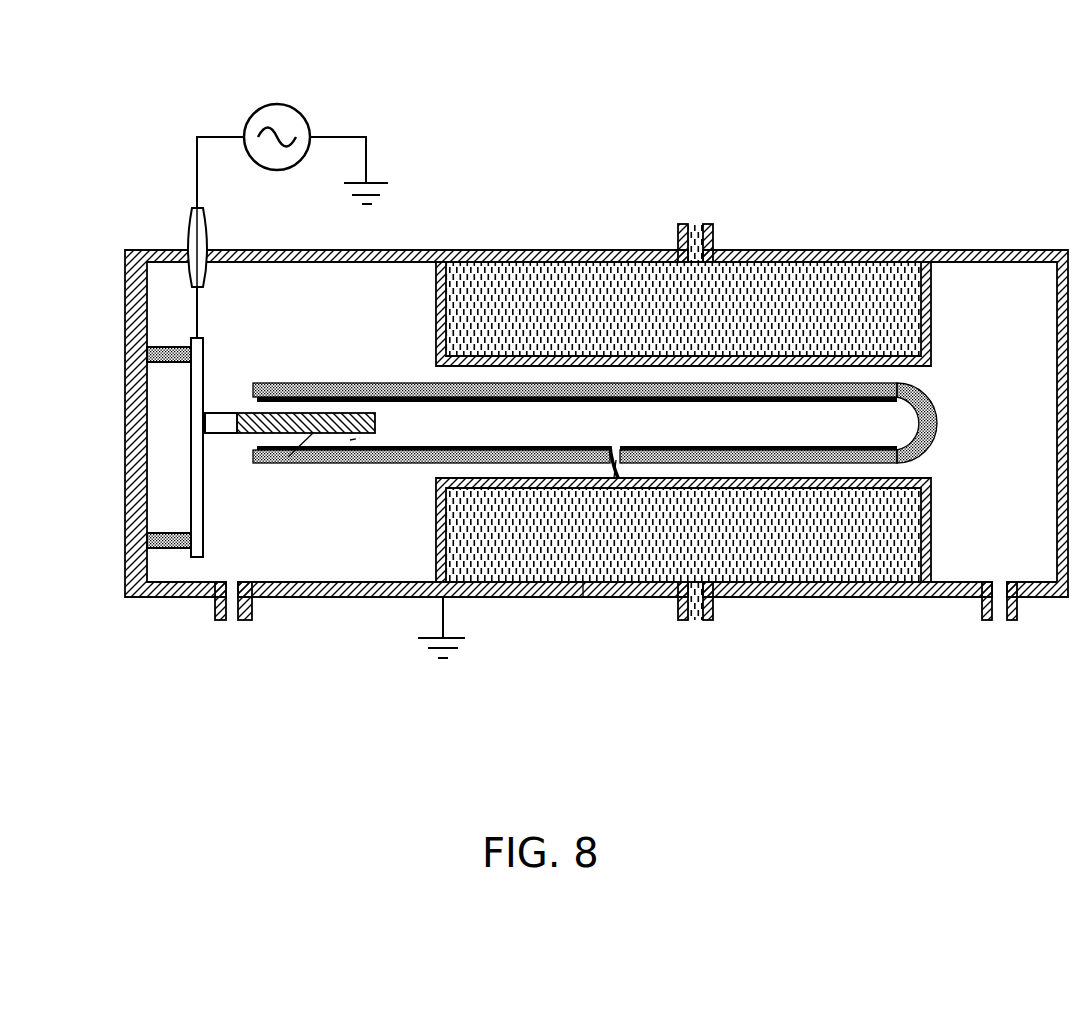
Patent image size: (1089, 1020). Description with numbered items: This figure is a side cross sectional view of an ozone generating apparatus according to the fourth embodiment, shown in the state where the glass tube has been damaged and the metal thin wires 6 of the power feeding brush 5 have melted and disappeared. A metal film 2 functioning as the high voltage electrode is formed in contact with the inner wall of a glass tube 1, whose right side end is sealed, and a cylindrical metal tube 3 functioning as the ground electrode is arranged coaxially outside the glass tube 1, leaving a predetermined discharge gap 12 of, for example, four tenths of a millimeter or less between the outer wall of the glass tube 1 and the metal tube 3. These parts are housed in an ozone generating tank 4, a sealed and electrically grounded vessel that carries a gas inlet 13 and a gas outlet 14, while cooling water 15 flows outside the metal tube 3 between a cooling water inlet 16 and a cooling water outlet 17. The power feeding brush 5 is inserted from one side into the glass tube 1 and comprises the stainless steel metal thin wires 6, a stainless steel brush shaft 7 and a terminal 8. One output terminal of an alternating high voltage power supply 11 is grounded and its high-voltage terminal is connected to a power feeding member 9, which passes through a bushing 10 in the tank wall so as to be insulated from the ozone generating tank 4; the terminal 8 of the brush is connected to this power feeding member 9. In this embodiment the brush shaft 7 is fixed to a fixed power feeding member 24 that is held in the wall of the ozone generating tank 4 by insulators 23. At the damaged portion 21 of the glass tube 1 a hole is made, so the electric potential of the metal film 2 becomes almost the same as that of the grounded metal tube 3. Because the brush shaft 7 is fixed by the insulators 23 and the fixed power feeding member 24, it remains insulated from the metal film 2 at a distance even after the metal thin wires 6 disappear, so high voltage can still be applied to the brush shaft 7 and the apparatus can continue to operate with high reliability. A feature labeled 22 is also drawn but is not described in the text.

The glass tube 1 is at (517, 388).
The metal film 2 is at (513, 450).
The metal tube 3 is at (567, 368).
The ozone generating tank 4 is at (847, 250).
The power feeding brush 5 is at (288, 457).
The metal thin wires 6 is at (350, 440).
The brush shaft 7 is at (277, 433).
The terminal 8 is at (207, 420).
The power feeding member 9 is at (193, 323).
The bushing 10 is at (190, 237).
The alternating high voltage power supply 11 is at (253, 117).
The discharge gap 12 is at (462, 375).
The gas inlet 13 is at (228, 622).
The gas outlet 14 is at (1000, 622).
The cooling water 15 is at (615, 470).
The cooling water inlet 16 is at (697, 620).
The cooling water outlet 17 is at (699, 223).
The damaged portion 21 is at (621, 445).
The bottom wall 22 is at (587, 600).
The insulators 23 is at (147, 347).
The fixed power feeding member 24 is at (192, 472).